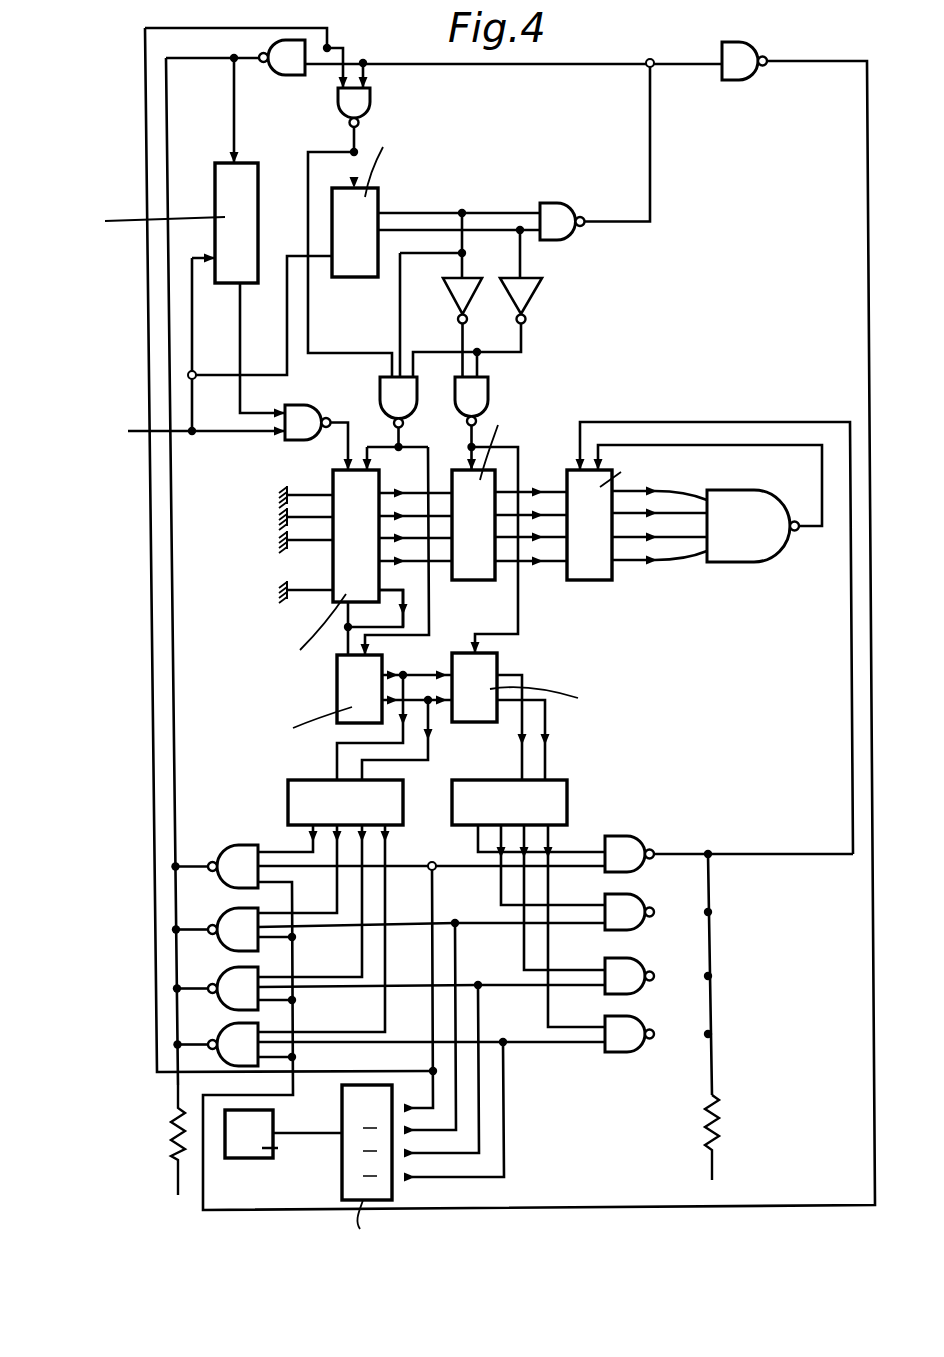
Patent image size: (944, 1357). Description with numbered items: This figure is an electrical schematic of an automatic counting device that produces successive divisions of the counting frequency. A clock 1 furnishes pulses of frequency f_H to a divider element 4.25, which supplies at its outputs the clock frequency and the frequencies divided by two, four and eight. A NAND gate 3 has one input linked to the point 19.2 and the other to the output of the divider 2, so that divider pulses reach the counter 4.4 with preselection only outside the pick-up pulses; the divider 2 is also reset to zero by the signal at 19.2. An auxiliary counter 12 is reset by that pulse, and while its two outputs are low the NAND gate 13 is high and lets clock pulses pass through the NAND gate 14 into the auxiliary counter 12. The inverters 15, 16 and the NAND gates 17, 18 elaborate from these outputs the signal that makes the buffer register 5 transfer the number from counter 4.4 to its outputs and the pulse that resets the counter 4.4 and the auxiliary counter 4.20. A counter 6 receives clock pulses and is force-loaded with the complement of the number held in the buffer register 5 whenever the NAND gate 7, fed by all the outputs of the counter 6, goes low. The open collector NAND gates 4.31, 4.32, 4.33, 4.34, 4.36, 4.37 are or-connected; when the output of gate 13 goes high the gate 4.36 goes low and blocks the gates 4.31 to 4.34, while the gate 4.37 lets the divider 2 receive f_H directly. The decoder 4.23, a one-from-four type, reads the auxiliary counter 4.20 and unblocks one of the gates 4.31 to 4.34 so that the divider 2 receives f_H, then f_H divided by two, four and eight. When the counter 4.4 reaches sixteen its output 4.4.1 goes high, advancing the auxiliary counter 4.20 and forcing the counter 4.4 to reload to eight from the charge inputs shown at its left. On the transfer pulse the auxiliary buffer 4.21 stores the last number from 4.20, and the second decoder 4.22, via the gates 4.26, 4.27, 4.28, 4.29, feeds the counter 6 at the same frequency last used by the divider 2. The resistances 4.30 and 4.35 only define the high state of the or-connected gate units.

The clock 1 is at (236, 1158).
The divider 2 is at (218, 163).
The NAND gate 3 is at (285, 443).
The counter with preselection 4.4 is at (350, 590).
The output 2^4 of counter 4.4 4.4.1 is at (404, 600).
The auxiliary counter 4.20 is at (337, 704).
The auxiliary buffer 4.21 is at (500, 667).
The second decoder 4.22 is at (568, 795).
The decoder 4.23 is at (288, 798).
The divider element 4.25 is at (342, 1158).
The NAND gate 4.26 is at (635, 838).
The NAND gate 4.27 is at (640, 897).
The NAND gate 4.28 is at (640, 960).
The NAND gate 4.29 is at (637, 1052).
The resistance 4.30 is at (718, 1125).
The NAND gate 4.31 is at (237, 846).
The NAND gate 4.32 is at (211, 924).
The NAND gate 4.33 is at (210, 984).
The NAND gate 4.34 is at (210, 1040).
The resistance 4.35 is at (171, 1124).
The NAND gate 4.36 is at (752, 80).
The NAND gate 4.37 is at (288, 75).
The buffer register 5 is at (486, 580).
The counter 6 is at (620, 580).
The NAND gate 7 is at (762, 562).
The auxiliary counter 12 is at (380, 193).
The NAND gate 13 is at (556, 203).
The NAND gate 14 is at (370, 105).
The inverter 15 is at (537, 292).
The inverter 16 is at (450, 297).
The NAND gate 17 is at (380, 395).
The NAND gate 18 is at (488, 398).
The point 19.2 is at (199, 422).